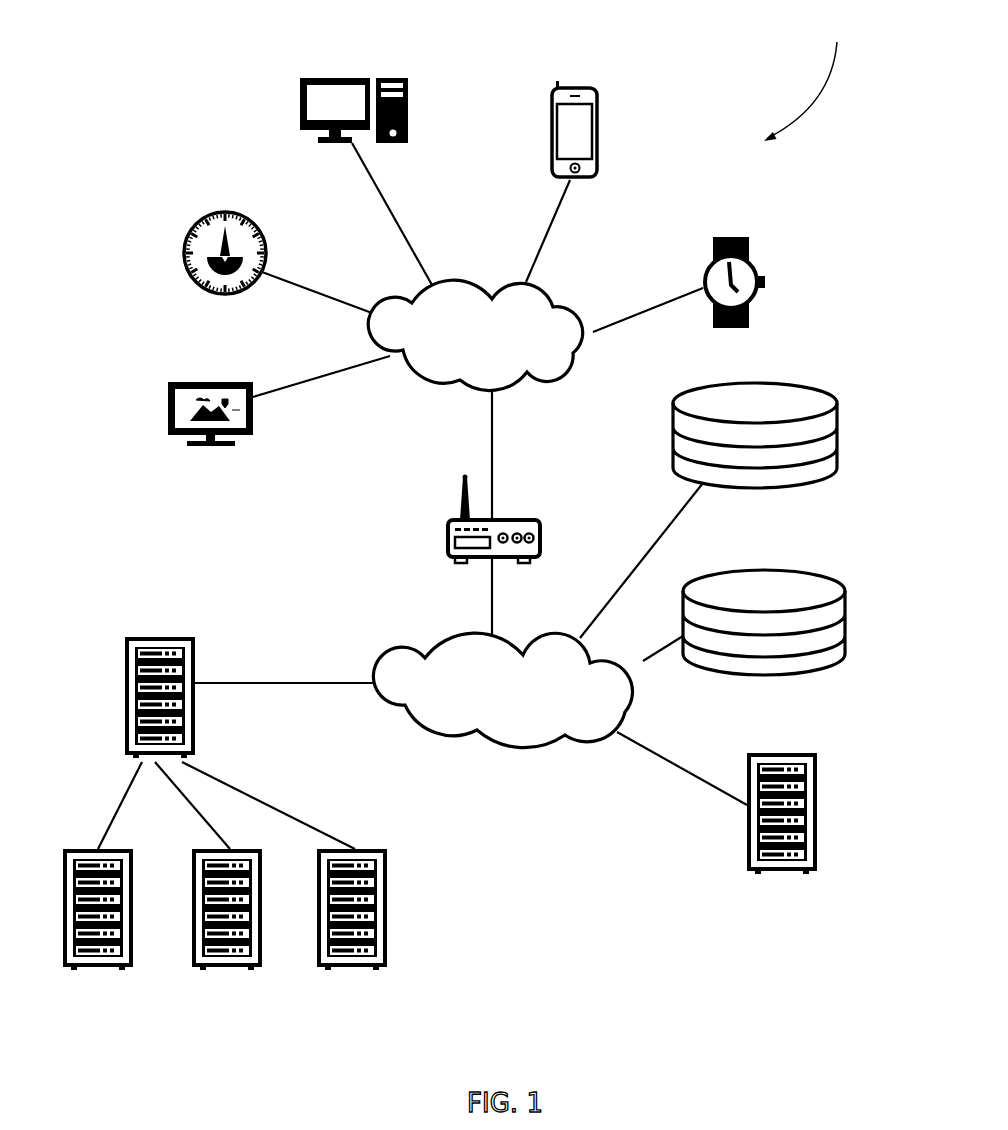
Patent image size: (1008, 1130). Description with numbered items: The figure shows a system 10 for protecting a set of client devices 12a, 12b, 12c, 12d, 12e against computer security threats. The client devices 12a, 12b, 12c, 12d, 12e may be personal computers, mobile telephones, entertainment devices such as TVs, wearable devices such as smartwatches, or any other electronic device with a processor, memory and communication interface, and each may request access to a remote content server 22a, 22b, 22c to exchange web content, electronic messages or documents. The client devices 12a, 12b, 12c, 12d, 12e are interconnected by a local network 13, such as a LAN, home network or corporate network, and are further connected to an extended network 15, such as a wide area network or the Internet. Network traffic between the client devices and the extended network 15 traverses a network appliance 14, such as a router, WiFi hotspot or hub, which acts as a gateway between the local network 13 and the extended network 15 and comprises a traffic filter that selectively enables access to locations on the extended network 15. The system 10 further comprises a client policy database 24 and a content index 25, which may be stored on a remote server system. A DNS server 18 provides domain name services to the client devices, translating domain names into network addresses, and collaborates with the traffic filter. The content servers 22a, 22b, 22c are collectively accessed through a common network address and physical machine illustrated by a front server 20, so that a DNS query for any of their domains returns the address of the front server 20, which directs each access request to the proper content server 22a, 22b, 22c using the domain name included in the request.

The system 10 is at (805, 75).
The client device 12a is at (252, 382).
The client device 12b is at (183, 253).
The client device 12c is at (413, 78).
The client device 12d is at (552, 117).
The client device 12e is at (738, 237).
The local network 13 is at (400, 380).
The network appliance 14 is at (520, 520).
The extended network 15 is at (395, 657).
The DNS server 18 is at (818, 847).
The front server 20 is at (123, 655).
The content server 22a is at (65, 893).
The content server 22b is at (192, 893).
The content server 22c is at (388, 855).
The client policy database 24 is at (838, 400).
The content index 25 is at (845, 590).